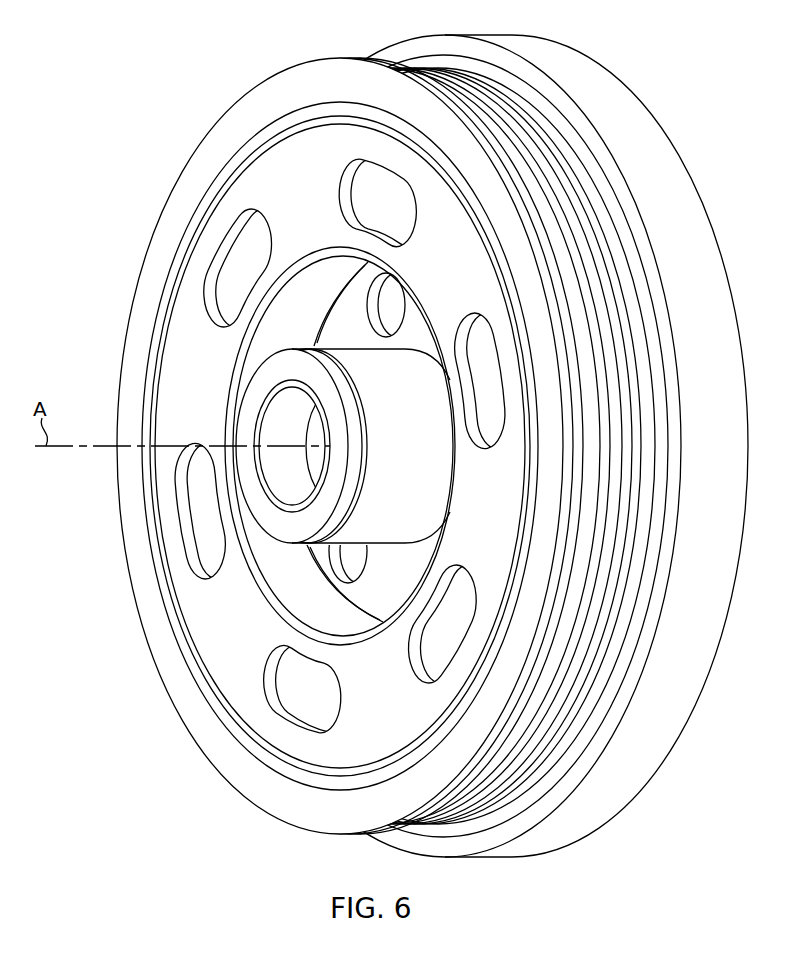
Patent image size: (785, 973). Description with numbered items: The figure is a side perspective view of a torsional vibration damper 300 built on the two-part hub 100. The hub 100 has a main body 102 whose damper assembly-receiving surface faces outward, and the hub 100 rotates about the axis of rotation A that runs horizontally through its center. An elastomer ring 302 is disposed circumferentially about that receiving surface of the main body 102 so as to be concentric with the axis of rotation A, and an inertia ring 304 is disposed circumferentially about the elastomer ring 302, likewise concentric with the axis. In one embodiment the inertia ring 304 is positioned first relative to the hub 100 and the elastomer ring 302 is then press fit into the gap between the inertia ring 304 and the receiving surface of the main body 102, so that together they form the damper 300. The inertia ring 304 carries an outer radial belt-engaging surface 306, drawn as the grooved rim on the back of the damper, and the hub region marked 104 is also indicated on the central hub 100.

The torsional vibration damper 300 is at (157, 83).
The hub 100 is at (196, 661).
The main body 102 is at (331, 115).
The hub 104 is at (290, 530).
The elastomer ring 302 is at (188, 240).
The inertia ring 304 is at (270, 84).
The outer radial belt-engaging surface 306 is at (632, 412).